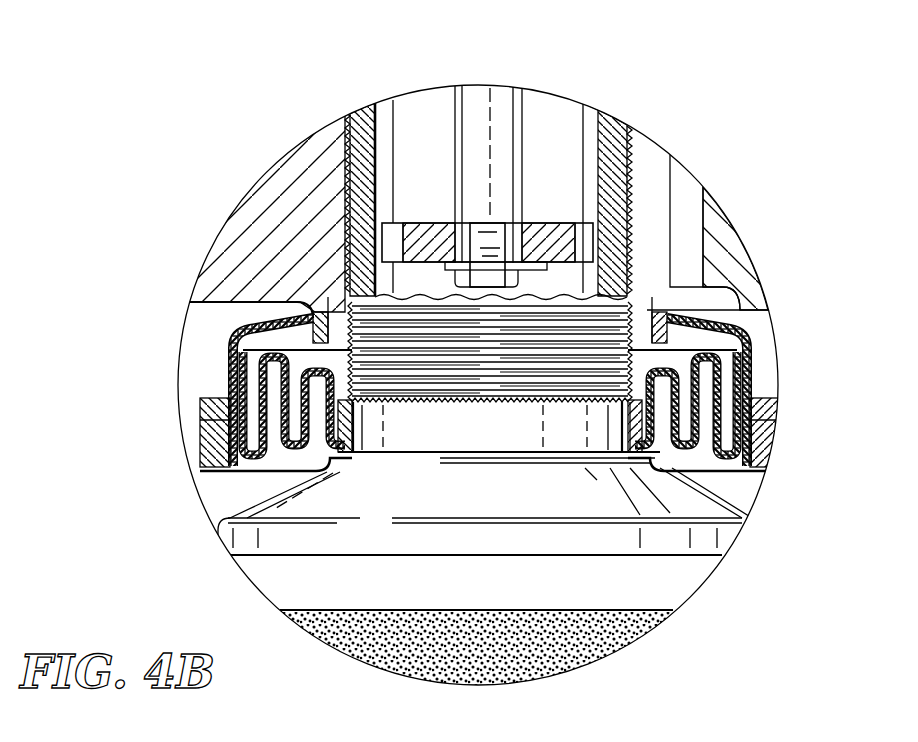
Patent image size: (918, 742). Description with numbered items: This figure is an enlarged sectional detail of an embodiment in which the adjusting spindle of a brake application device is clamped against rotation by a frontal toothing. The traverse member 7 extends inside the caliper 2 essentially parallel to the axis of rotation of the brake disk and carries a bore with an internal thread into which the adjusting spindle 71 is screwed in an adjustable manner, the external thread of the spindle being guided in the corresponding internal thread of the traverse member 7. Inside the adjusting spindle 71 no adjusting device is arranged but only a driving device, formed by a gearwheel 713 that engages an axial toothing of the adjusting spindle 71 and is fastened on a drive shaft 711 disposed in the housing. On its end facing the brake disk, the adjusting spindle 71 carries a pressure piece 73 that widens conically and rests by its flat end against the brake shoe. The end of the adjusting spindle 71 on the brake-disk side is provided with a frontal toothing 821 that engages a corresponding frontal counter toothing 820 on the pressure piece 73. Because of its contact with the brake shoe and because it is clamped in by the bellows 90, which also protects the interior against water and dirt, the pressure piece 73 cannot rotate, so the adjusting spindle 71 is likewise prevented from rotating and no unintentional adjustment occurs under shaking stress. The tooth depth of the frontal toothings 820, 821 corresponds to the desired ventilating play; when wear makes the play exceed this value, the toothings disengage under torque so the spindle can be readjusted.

The caliper 2 is at (743, 278).
The traverse member 7 is at (300, 167).
The adjusting spindle 71 is at (610, 127).
The drive shaft 711 is at (498, 97).
The gearwheel 713 is at (447, 237).
The pressure piece 73 is at (727, 518).
The bellows 90 is at (205, 458).
The frontal counter toothing 820 is at (533, 400).
The frontal toothing 821 is at (600, 395).